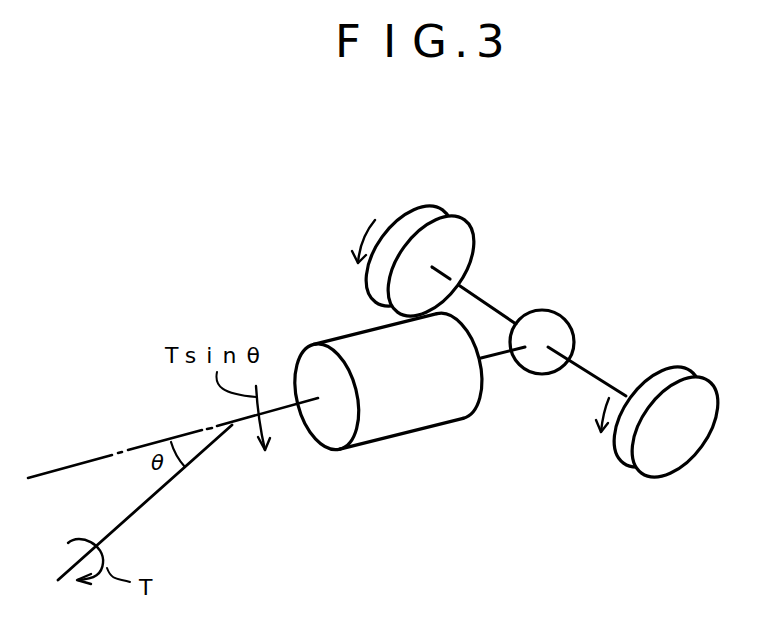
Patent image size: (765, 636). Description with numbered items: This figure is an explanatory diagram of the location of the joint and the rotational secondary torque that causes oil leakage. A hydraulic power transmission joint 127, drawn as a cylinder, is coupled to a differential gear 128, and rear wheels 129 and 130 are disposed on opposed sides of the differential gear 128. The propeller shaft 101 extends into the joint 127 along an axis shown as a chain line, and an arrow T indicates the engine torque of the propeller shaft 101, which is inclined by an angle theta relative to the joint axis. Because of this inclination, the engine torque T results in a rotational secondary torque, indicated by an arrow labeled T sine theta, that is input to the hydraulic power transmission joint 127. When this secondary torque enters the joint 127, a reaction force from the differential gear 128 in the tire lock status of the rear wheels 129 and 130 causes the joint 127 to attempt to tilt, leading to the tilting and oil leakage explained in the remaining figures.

The propeller shaft 101 is at (155, 495).
The hydraulic power transmission joint 127 is at (398, 418).
The differential gear 128 is at (563, 318).
The rear wheel 129 is at (427, 218).
The rear wheel 130 is at (658, 457).